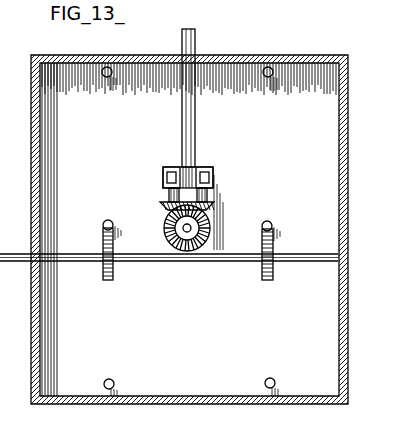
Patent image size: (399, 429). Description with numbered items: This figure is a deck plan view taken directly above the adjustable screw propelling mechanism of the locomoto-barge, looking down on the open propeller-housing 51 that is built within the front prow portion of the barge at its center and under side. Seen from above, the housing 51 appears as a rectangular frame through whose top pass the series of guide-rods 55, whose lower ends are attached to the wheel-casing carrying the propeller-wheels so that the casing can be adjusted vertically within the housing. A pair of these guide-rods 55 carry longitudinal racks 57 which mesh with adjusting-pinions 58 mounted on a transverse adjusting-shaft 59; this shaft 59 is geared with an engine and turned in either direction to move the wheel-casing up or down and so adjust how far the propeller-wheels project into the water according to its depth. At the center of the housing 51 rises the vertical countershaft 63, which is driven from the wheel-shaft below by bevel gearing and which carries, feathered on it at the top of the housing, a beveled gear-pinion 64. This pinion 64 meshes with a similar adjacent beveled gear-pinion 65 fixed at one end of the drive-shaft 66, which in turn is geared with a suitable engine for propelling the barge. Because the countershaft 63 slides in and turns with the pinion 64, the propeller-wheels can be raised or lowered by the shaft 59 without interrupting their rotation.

The propeller-housing 51 is at (201, 229).
The guide-rods 55 is at (282, 370).
The longitudinal racks 57 is at (290, 231).
The adjusting-pinions 58 is at (259, 297).
The transverse adjusting-shaft 59 is at (228, 262).
The vertical countershaft 63 is at (191, 228).
The beveled gear-pinion 64 is at (164, 228).
The beveled gear-pinion 65 is at (214, 205).
The drive-shaft 66 is at (195, 133).